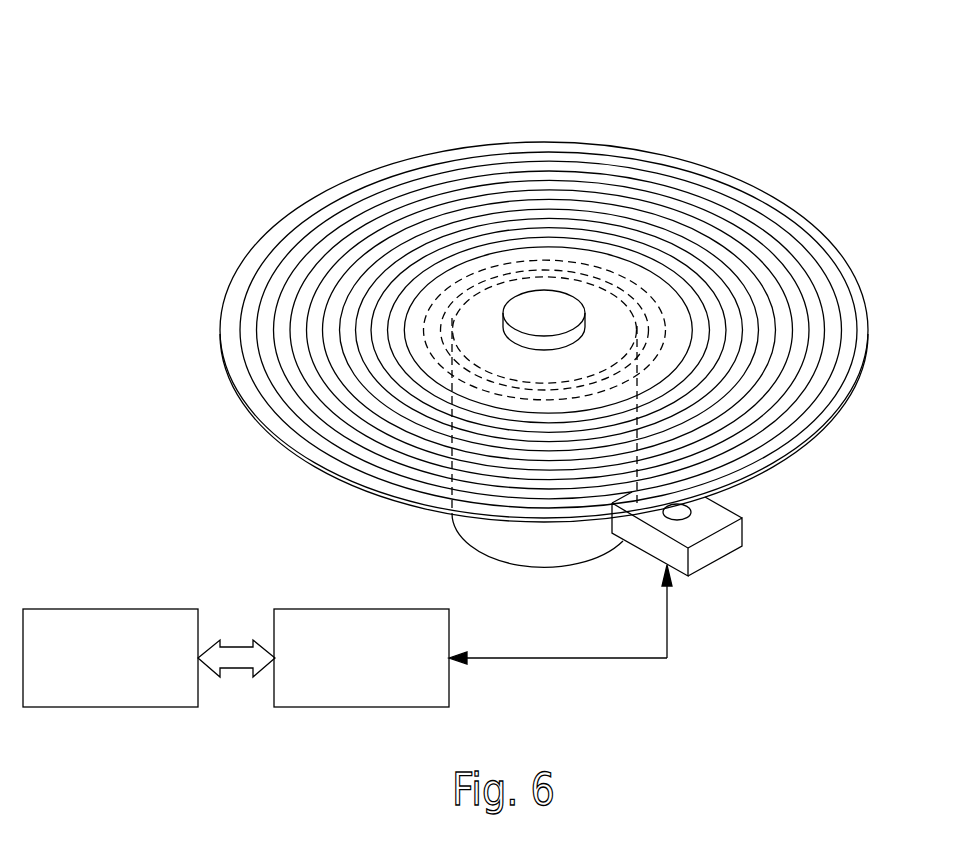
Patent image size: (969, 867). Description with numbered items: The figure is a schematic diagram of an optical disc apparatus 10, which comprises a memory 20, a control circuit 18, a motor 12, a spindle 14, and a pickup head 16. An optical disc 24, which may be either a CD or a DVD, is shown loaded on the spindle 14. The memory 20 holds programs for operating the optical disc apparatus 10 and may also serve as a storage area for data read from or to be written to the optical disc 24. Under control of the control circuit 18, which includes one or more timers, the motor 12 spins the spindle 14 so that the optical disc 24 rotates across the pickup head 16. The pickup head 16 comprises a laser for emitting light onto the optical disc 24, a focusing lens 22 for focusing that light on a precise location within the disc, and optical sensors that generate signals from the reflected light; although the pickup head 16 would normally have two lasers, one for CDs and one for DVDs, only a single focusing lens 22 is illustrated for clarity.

The optical disc apparatus 10 is at (562, 353).
The motor 12 is at (568, 555).
The spindle 14 is at (603, 228).
The pickup head 16 is at (717, 539).
The control circuit 18 is at (352, 608).
The memory 20 is at (100, 608).
The focusing lens 22 is at (691, 512).
The optical disc 24 is at (842, 257).